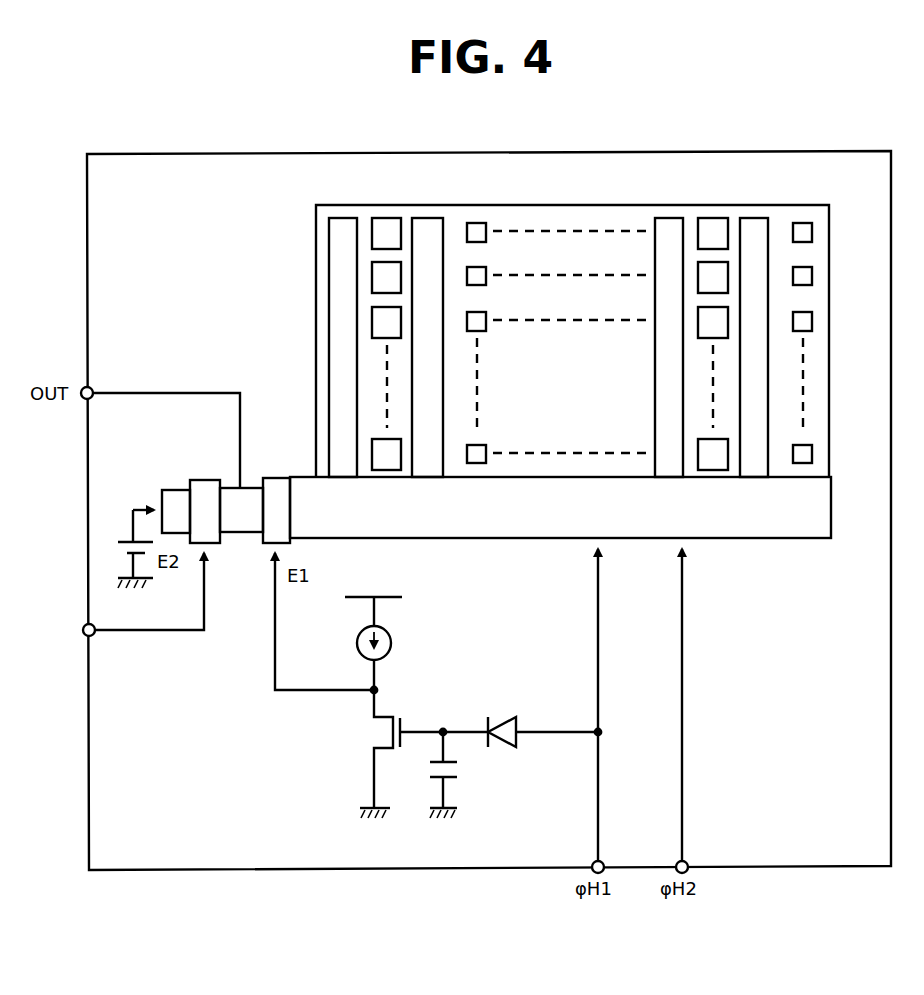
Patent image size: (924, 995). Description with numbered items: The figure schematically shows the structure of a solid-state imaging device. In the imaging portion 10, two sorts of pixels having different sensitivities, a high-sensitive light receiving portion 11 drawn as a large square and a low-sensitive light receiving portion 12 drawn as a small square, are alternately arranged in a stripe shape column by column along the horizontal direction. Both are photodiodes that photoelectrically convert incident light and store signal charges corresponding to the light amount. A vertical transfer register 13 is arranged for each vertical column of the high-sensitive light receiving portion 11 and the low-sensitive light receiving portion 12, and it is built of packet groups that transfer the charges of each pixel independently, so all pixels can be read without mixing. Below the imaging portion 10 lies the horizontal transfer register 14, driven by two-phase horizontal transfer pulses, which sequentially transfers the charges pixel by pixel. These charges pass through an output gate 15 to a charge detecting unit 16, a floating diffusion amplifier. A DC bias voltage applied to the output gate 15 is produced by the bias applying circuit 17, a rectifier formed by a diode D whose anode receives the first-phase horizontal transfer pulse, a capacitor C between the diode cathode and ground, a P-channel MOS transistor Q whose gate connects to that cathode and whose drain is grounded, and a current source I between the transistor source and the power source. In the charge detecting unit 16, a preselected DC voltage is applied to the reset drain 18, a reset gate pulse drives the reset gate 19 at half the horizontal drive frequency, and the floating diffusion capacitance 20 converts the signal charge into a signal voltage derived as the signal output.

The imaging portion 10 is at (511, 321).
The high-sensitive light receiving portion 11 is at (387, 227).
The low-sensitive light receiving portion 12 is at (478, 226).
The vertical transfer register 13 is at (433, 364).
The horizontal transfer register 14 is at (803, 530).
The output gate 15 is at (290, 518).
The charge detecting unit 16 is at (161, 645).
The bias applying circuit 17 is at (431, 723).
The reset drain 18 is at (172, 496).
The reset gate 19 is at (207, 490).
The floating diffusion capacitance 20 is at (237, 530).
The P-channel MOS transistor Q is at (381, 735).
The current source I is at (391, 643).
The diode D is at (503, 714).
The capacitor C is at (462, 767).